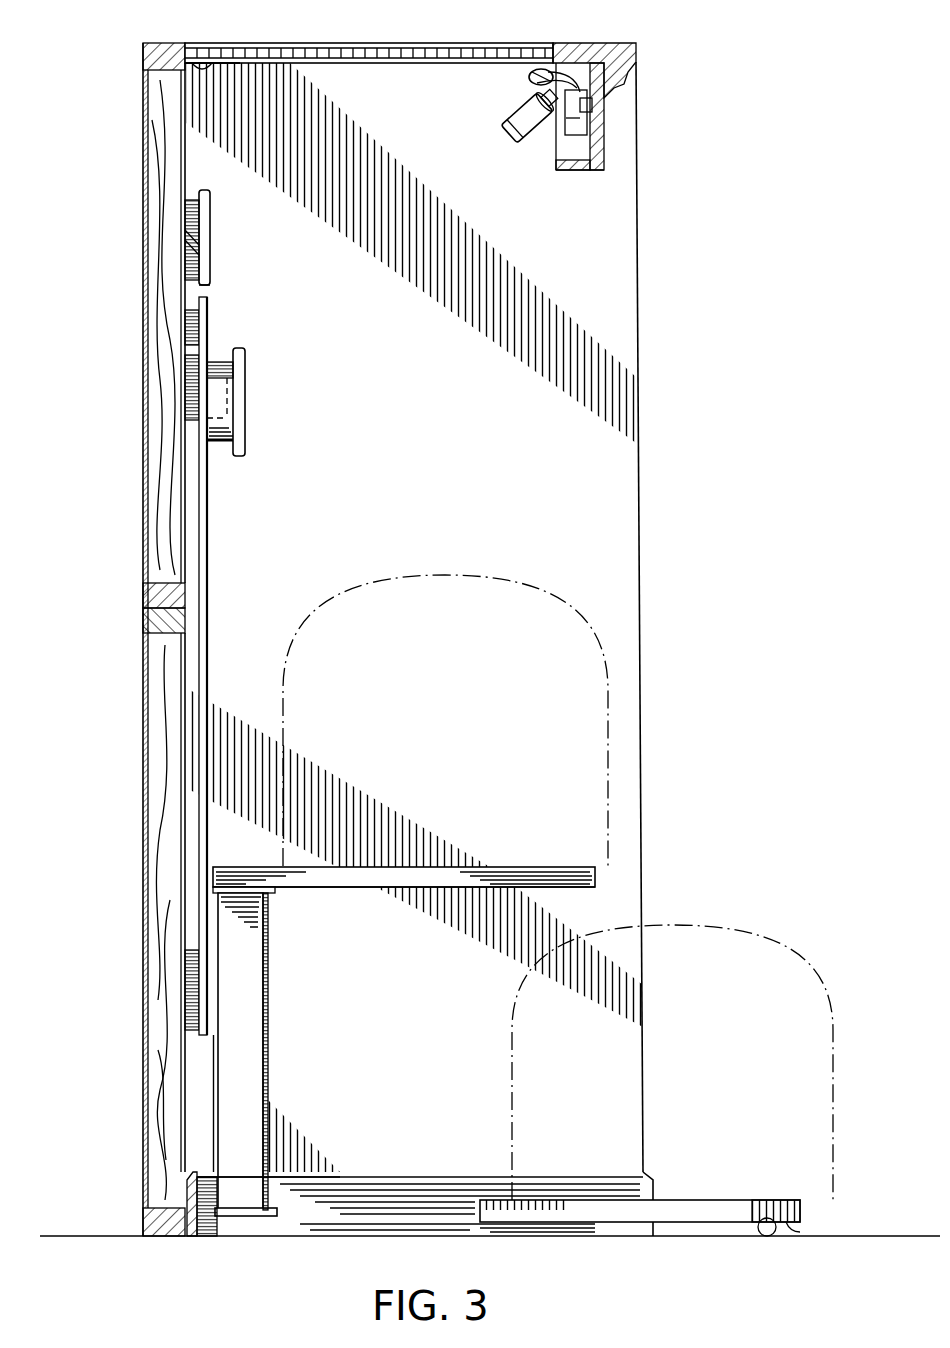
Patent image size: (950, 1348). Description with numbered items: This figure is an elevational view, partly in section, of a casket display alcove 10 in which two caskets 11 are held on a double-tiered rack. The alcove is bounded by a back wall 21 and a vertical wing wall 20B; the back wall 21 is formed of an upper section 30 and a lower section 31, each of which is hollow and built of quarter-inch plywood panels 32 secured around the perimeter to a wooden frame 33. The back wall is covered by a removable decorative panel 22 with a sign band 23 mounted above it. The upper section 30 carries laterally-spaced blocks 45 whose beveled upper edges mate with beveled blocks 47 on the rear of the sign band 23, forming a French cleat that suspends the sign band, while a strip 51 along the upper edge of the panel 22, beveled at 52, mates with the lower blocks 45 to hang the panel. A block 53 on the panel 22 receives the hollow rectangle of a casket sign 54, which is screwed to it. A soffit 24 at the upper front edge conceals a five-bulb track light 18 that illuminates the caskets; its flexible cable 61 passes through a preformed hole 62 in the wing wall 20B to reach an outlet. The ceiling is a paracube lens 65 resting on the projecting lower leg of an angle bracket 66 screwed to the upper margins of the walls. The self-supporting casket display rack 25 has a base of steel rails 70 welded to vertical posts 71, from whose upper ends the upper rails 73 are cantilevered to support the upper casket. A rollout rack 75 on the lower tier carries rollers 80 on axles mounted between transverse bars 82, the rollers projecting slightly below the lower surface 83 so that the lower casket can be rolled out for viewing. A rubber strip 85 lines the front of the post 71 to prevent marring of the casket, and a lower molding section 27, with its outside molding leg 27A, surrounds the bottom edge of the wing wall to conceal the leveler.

The alcove 10 is at (784, 146).
The casket 11 is at (514, 582).
The track light 18 is at (510, 135).
The right wing wall 20B is at (424, 448).
The back wall 21 is at (142, 128).
The decorative panel 22 is at (208, 546).
The sign band 23 is at (212, 281).
The soffit 24 is at (640, 46).
The casket display rack 25 is at (510, 864).
The lower molding section 27 is at (654, 1182).
The molding leg 27A is at (348, 1174).
The upper section 30 is at (142, 505).
The lower section 31 is at (142, 808).
The plywood panel 32 is at (152, 660).
The wooden frame 33 is at (192, 42).
The block 45 is at (200, 252).
The block 47 is at (202, 204).
The strip 51 is at (203, 326).
The bevel 52 is at (192, 375).
The block 53 is at (228, 410).
The casket sign 54 is at (238, 440).
The flexible cable 61 is at (566, 98).
The preformed hole 62 is at (534, 83).
The paracube lens 65 is at (406, 42).
The angle bracket 66 is at (214, 66).
The steel rail 70 is at (380, 1212).
The vertical post 71 is at (258, 1062).
The upper rail 73 is at (368, 878).
The rollout rack 75 is at (802, 1198).
The roller 80 is at (768, 1236).
The transverse bar 82 is at (676, 1220).
The lower surface 83 is at (798, 1230).
The rubber strip 85 is at (270, 1024).